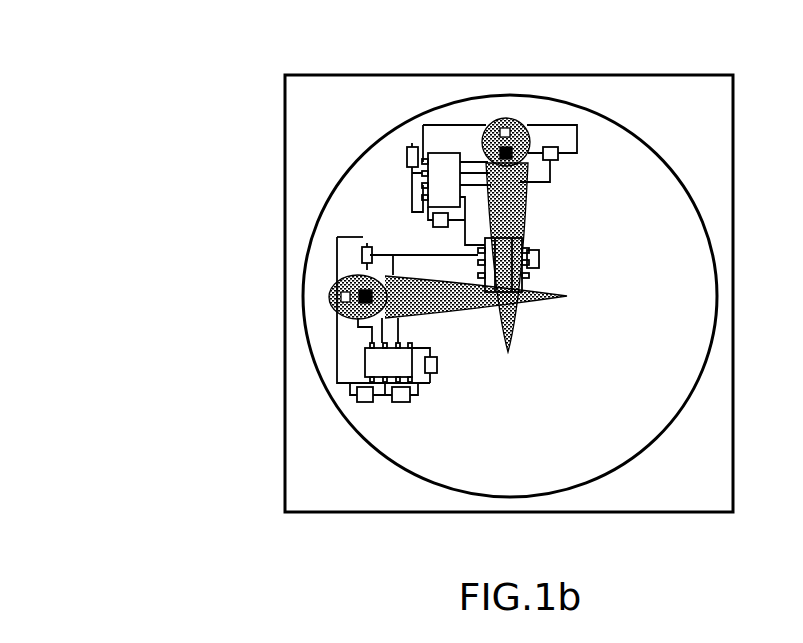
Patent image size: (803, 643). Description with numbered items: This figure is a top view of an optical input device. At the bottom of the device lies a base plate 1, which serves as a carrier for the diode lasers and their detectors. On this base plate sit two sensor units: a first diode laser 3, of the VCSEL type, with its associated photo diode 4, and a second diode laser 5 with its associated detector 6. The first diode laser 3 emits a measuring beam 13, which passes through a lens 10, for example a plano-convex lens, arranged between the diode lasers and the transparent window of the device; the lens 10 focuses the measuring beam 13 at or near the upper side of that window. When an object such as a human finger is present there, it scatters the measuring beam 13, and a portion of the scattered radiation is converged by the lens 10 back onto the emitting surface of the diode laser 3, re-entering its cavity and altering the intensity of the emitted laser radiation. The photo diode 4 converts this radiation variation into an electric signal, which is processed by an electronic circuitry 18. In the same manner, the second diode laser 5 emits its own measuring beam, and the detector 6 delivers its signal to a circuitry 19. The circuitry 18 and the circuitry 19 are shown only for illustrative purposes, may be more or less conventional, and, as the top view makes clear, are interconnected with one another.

The base plate 1 is at (713, 118).
The lens 10 is at (610, 167).
The diode laser 3 is at (507, 118).
The photo diode 4 is at (530, 160).
The electronic circuitry 18 is at (552, 147).
The measuring beam 13 is at (522, 230).
The second diode laser 5 is at (328, 284).
The detector 6 is at (345, 305).
The circuitry 19 is at (355, 255).